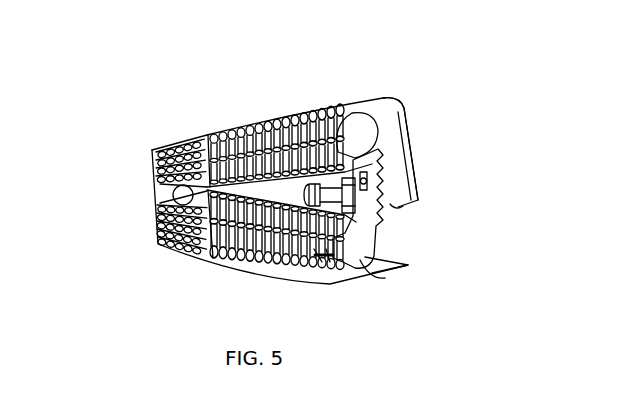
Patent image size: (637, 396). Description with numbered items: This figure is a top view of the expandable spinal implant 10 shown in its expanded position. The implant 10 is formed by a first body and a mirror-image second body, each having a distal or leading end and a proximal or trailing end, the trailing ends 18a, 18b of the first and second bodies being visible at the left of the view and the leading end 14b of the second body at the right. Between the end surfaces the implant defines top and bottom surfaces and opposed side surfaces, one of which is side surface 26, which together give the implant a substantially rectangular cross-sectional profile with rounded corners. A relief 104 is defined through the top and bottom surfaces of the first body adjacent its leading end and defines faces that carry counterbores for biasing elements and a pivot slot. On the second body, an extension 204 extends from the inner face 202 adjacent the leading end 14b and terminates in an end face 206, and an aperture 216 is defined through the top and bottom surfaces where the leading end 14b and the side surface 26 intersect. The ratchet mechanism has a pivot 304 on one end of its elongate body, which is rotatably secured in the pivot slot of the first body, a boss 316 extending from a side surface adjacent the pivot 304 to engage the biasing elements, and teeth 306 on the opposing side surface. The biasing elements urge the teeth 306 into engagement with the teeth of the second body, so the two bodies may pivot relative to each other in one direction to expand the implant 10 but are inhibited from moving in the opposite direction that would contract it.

The expandable spinal implant 10 is at (195, 92).
The leading end 14b is at (430, 140).
The trailing end 18a is at (150, 231).
The trailing end 18b is at (143, 171).
The side surface 26 is at (266, 100).
The relief 104 is at (316, 248).
The inner face 202 is at (358, 163).
The extension 204 is at (405, 188).
The end face 206 is at (412, 203).
The aperture 216 is at (354, 115).
The pivot 304 is at (372, 276).
The teeth 306 is at (385, 224).
The boss 316 is at (330, 262).